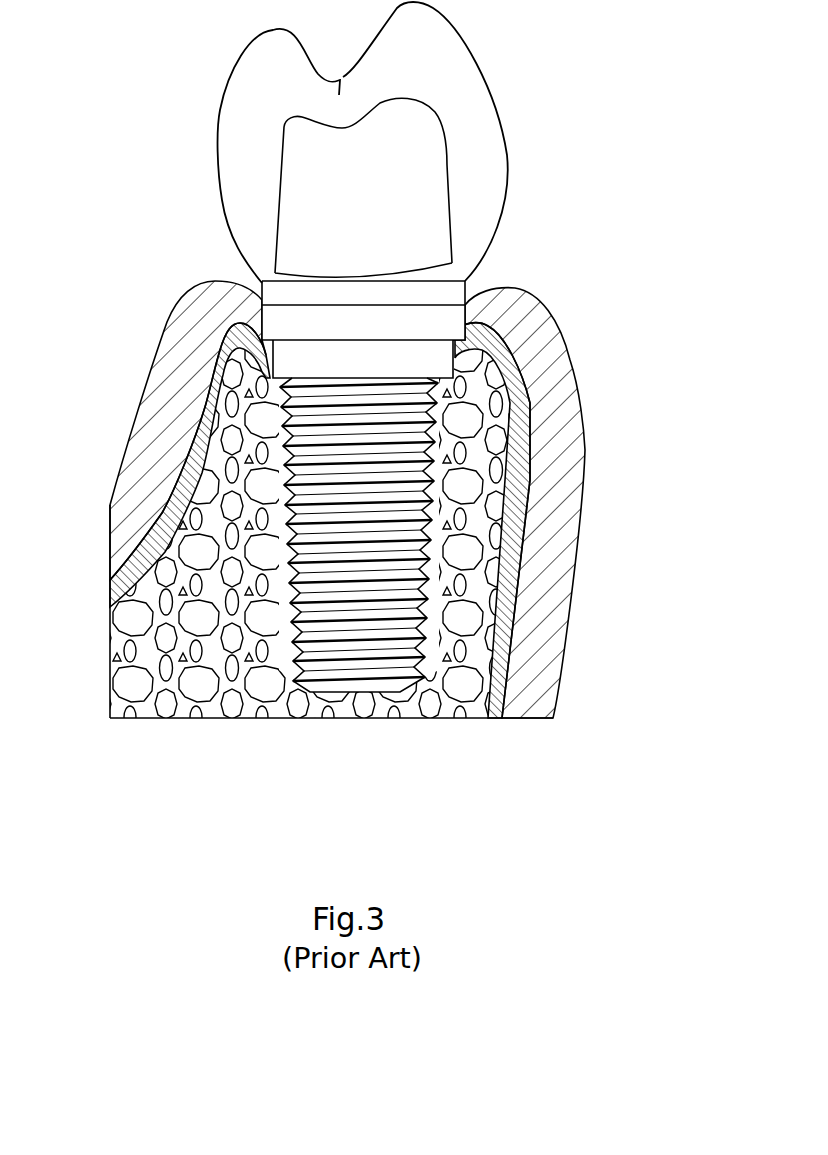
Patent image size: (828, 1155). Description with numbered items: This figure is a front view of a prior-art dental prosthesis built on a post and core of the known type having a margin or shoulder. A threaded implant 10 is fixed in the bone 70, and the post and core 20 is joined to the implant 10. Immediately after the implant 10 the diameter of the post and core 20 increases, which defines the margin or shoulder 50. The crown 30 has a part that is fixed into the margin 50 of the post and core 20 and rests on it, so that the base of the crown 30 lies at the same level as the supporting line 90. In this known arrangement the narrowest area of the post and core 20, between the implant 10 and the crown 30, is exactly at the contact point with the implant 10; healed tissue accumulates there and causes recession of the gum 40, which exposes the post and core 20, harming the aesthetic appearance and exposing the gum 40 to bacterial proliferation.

The implant 10 is at (437, 358).
The post and core 20 is at (435, 322).
The crown 30 is at (478, 202).
The gum 40 is at (573, 470).
The margin or shoulder 50 is at (297, 272).
The bone 70 is at (212, 655).
The supporting line 90 is at (275, 273).